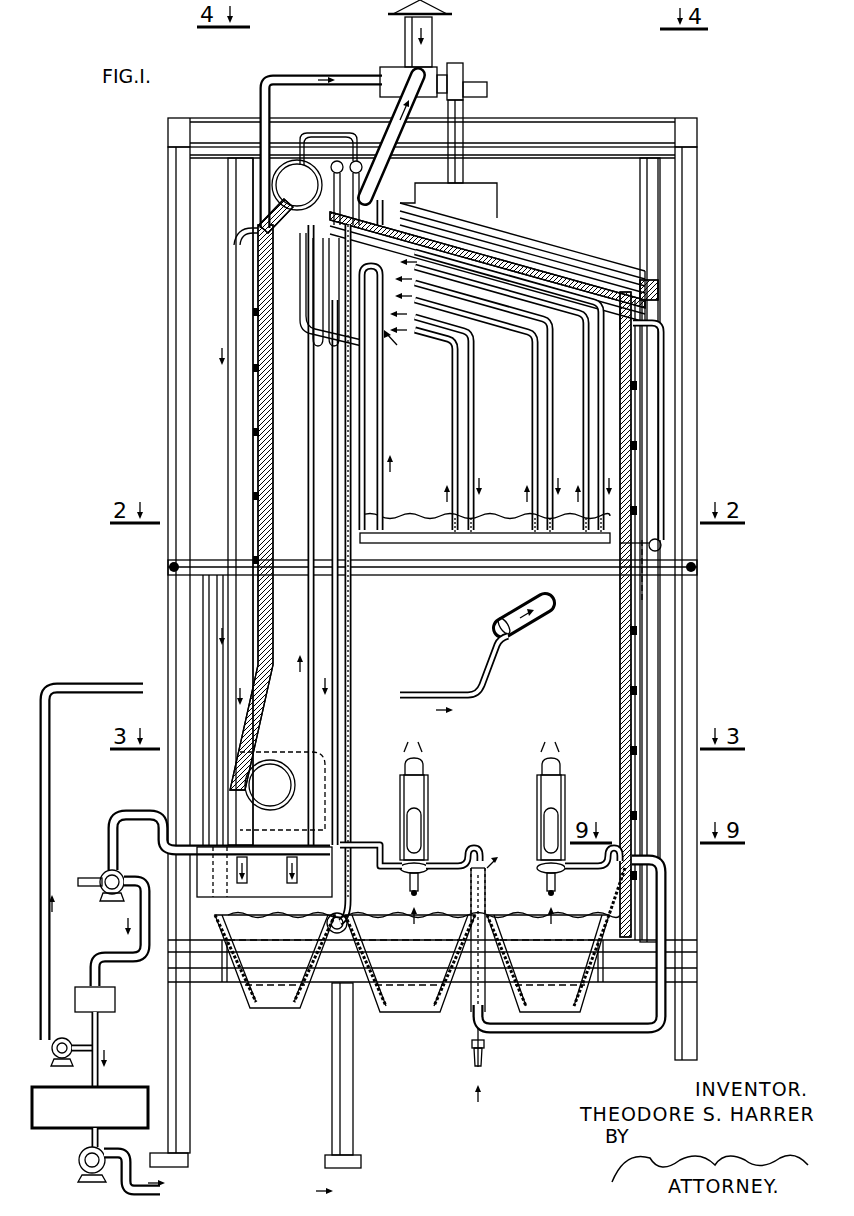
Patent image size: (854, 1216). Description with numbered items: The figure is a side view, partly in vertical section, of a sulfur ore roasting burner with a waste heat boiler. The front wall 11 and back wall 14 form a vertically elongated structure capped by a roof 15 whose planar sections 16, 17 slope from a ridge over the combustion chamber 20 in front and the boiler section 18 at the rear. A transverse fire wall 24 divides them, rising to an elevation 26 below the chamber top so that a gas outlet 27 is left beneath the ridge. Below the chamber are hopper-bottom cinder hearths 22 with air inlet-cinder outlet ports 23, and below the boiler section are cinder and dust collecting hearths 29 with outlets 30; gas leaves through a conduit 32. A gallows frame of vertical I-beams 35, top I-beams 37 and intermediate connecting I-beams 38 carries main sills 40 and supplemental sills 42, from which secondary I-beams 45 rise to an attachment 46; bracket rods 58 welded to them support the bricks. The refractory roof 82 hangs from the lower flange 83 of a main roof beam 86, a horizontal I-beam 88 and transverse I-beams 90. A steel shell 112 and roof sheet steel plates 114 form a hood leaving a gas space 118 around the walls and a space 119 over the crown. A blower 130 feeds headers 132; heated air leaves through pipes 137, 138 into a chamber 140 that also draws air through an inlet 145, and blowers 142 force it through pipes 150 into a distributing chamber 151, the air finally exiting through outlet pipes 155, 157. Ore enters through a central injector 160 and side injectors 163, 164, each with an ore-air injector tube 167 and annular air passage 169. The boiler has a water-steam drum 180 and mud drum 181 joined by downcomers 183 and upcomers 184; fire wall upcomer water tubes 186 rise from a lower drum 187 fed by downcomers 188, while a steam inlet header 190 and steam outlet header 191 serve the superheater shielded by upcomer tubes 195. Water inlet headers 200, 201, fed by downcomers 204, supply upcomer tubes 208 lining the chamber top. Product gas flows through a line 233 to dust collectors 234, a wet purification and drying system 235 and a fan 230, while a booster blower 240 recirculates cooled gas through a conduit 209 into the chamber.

The front wall 11 is at (662, 656).
The back wall 14 is at (252, 406).
The roof 15 is at (648, 250).
The roof section 16 is at (655, 263).
The roof section 17 is at (268, 212).
The boiler section 18 is at (295, 476).
The combustion chamber 20 is at (595, 416).
The cinder hearths 22 is at (384, 1014).
The air inlet-cinder outlet ports 23 is at (420, 1014).
The fire wall 24 is at (384, 424).
The elevation 26 is at (366, 381).
The gas outlet 27 is at (407, 350).
The cinder and dust collecting hearths 29 is at (246, 1002).
The outlets 30 is at (272, 1006).
The conduit 32 is at (200, 868).
The vertical I-beams 35 is at (168, 239).
The top I-beams 37 is at (168, 131).
The intermediate connecting I-beams 38 is at (168, 568).
The main sills 40 is at (170, 962).
The supplemental sills 42 is at (222, 983).
The secondary I-beams 45 is at (638, 203).
The attachment 46 is at (640, 163).
The bracket rod 58 is at (636, 385).
The refractory roof 82 is at (512, 243).
The lower flange 83 is at (503, 236).
The main roof beam 86 is at (588, 262).
The horizontal I-beam 88 is at (660, 291).
The transverse I-beams 90 is at (602, 282).
The steel shell 112 is at (645, 384).
The sheet steel plates 114 is at (552, 257).
The space 118 is at (637, 619).
The space 119 is at (540, 251).
The blower 130 is at (104, 874).
The headers 132 is at (135, 814).
The pipe 137 is at (318, 76).
The pipe 138 is at (390, 132).
The chamber 140 is at (436, 72).
The blowers 142 is at (464, 74).
The inlet 145 is at (405, 46).
The pipes 150 is at (464, 110).
The distributing chamber 151 is at (487, 195).
The outlet pipe 155 is at (447, 862).
The outlet pipe 157 is at (610, 1034).
The injector 160 is at (470, 956).
The side injector 163 is at (429, 800).
The side injector 164 is at (540, 826).
The ore-air injector tube 167 is at (547, 887).
The annular air passage 169 is at (470, 886).
The water-steam drum 180 is at (310, 196).
The mud drum 181 is at (283, 796).
The downcomers 183 is at (258, 229).
The upcomers 184 is at (309, 716).
The upcomer water tubes 186 is at (352, 218).
The lower drum 187 is at (335, 934).
The downcomers 188 is at (333, 523).
The steam inlet header 190 is at (383, 175).
The steam outlet header 191 is at (337, 160).
The upcomer tubes 195 is at (345, 348).
The water inlet header 200 is at (432, 545).
The water inlet header 201 is at (662, 546).
The downcomers 204 is at (452, 451).
The upcomer tubes 208 is at (547, 408).
The conduit 209 is at (48, 800).
The fan 230 is at (79, 1161).
The line 233 is at (139, 914).
The dust collectors 234 is at (115, 1006).
The wet purification and drying system 235 is at (122, 1088).
The booster blower 240 is at (65, 1039).